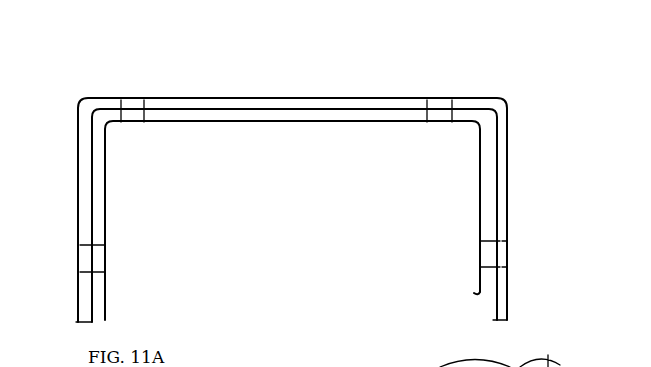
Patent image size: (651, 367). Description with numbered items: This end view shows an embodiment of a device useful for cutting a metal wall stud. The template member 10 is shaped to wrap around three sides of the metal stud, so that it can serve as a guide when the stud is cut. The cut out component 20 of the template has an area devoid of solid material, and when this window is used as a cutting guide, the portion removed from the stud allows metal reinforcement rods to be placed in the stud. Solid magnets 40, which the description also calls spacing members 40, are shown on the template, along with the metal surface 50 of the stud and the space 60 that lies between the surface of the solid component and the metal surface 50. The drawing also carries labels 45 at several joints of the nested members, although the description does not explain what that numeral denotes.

The template member 10 is at (300, 97).
The cut out component 20 is at (185, 105).
The space 60 is at (245, 122).
The solid magnets 40 is at (121, 122).
The joint 45 is at (146, 122).
The metal surface 50 is at (320, 122).